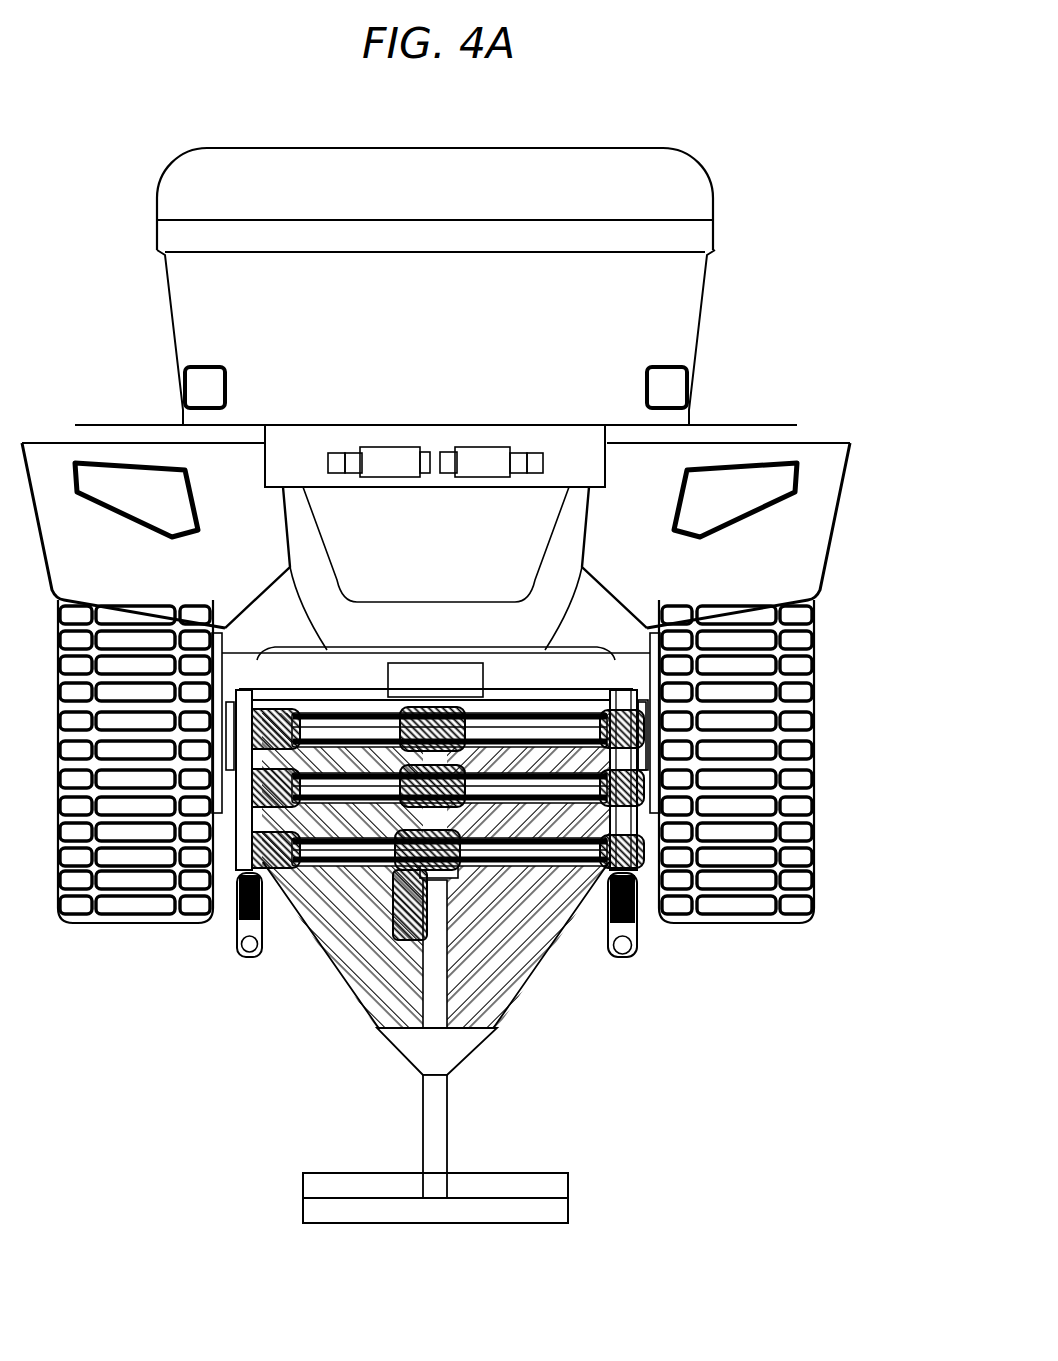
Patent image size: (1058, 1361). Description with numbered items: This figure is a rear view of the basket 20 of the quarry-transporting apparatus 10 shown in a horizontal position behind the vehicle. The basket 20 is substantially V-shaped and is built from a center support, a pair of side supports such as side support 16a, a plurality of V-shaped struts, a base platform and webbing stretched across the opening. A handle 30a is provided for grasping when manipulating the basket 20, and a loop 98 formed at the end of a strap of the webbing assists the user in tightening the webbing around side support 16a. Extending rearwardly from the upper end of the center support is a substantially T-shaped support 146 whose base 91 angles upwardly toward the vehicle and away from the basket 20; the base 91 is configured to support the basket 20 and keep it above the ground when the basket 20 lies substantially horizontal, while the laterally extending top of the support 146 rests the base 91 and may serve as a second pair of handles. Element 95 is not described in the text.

The T-shaped support 146 is at (240, 1171).
The apparatus 10 is at (531, 885).
The basket 20 is at (578, 683).
The side support 16a is at (233, 870).
The handle 30a is at (252, 958).
The right hydraulic cylinder 95 is at (638, 913).
The loop 98 is at (395, 893).
The base 91 is at (440, 1120).